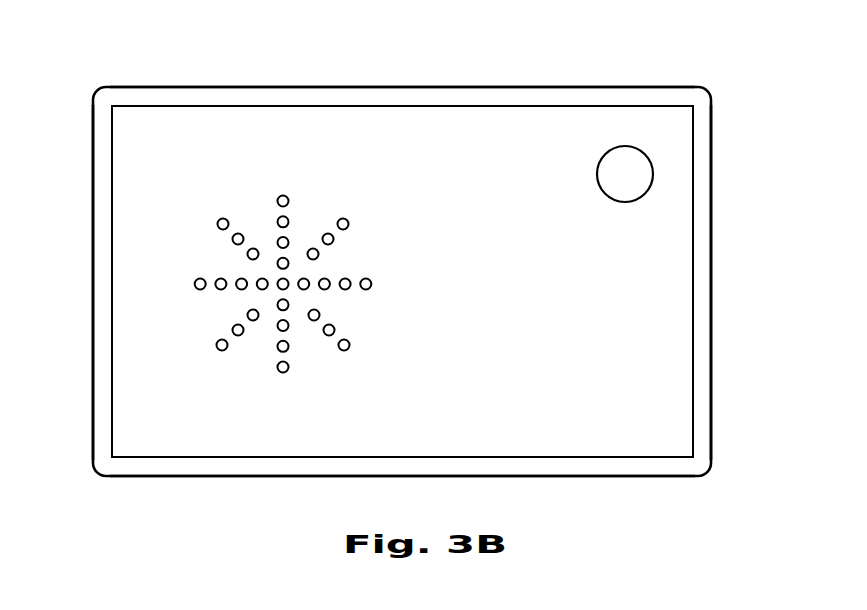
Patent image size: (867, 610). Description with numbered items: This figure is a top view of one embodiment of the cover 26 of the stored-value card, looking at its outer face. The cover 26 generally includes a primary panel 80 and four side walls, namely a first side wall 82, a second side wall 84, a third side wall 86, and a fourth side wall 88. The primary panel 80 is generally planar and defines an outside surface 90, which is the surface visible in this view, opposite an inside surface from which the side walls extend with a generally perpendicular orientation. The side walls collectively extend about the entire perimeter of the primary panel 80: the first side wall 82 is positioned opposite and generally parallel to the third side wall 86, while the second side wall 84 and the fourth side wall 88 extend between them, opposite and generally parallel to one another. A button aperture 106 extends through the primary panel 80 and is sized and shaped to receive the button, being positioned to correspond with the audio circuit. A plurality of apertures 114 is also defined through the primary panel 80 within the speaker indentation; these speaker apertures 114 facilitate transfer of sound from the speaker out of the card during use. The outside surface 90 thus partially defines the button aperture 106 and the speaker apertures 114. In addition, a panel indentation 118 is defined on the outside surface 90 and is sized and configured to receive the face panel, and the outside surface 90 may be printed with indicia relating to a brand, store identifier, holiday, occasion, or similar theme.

The cover 26 is at (637, 67).
The primary panel 80 is at (414, 140).
The first side wall 82 is at (261, 87).
The second side wall 84 is at (712, 331).
The third side wall 86 is at (597, 477).
The fourth side wall 88 is at (93, 290).
The outside surface 90 is at (660, 413).
The button aperture 106 is at (632, 176).
The plurality of apertures 114 is at (236, 333).
The panel indentation 118 is at (671, 262).